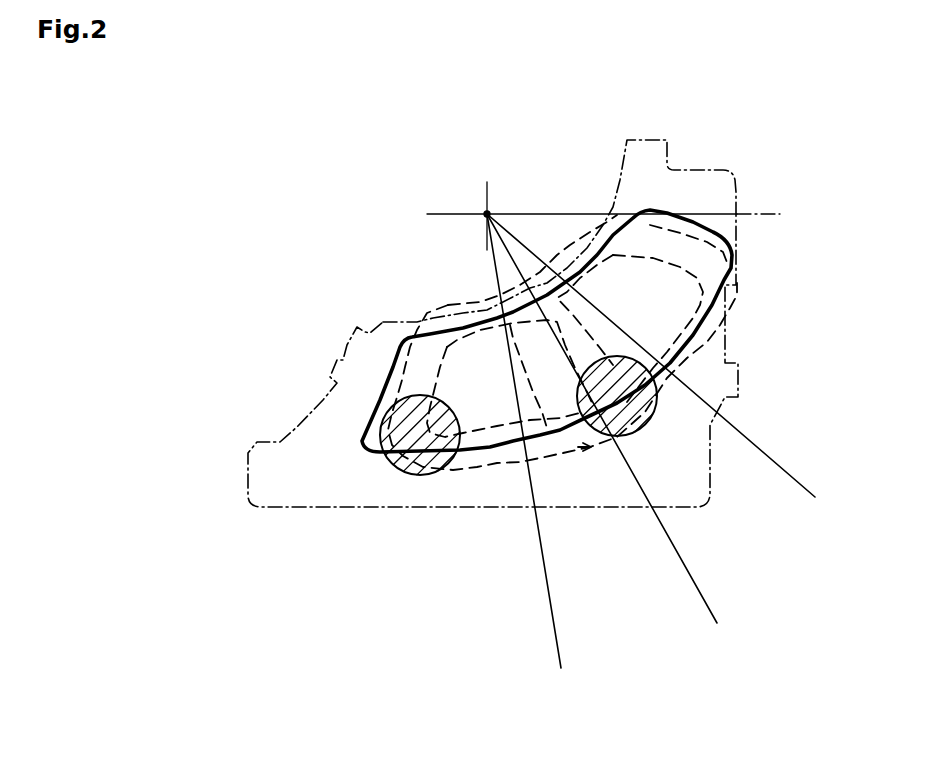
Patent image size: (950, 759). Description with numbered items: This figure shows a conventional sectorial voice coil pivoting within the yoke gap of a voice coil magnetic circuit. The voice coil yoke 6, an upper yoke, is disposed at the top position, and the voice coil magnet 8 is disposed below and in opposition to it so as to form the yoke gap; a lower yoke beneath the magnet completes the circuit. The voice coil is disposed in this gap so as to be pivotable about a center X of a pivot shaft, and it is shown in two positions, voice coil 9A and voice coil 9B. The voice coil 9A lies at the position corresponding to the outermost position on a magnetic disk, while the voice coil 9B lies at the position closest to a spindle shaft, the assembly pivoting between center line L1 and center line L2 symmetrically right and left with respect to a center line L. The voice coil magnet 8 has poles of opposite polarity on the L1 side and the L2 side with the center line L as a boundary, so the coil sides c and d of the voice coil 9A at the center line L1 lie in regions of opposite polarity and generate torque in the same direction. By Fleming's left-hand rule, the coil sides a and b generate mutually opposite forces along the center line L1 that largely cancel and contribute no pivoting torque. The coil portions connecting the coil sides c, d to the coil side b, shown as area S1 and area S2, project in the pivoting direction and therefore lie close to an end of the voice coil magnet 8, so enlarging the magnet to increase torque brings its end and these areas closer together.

The voice coil yoke 6 is at (697, 170).
The voice coil magnet 8 is at (510, 443).
The voice coil 9A is at (448, 305).
The voice coil 9B is at (560, 250).
The center of a pivot shaft X is at (487, 214).
The center line L is at (603, 418).
The center line L1 is at (538, 441).
The center line L2 is at (653, 355).
The area S1 is at (410, 478).
The area S2 is at (630, 435).
The coil side a is at (482, 320).
The coil side b is at (547, 447).
The coil side c is at (603, 343).
The coil side d is at (423, 373).